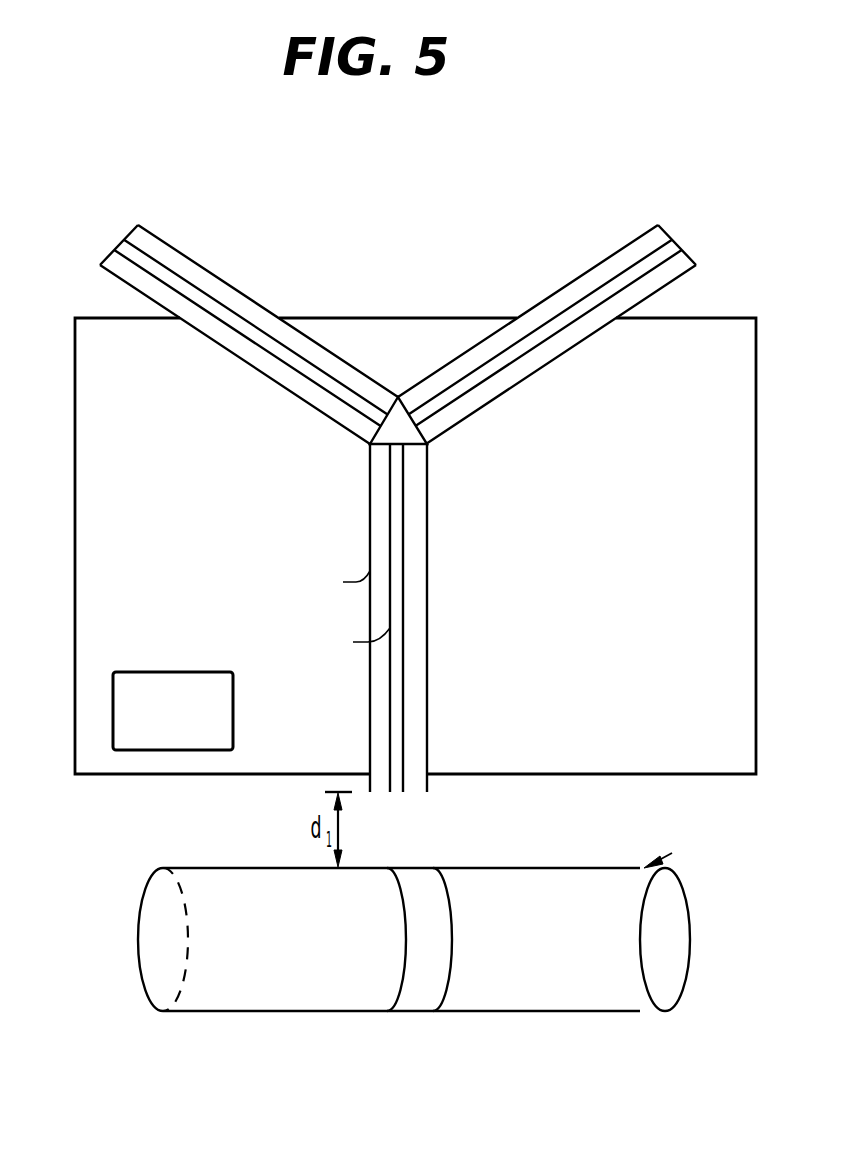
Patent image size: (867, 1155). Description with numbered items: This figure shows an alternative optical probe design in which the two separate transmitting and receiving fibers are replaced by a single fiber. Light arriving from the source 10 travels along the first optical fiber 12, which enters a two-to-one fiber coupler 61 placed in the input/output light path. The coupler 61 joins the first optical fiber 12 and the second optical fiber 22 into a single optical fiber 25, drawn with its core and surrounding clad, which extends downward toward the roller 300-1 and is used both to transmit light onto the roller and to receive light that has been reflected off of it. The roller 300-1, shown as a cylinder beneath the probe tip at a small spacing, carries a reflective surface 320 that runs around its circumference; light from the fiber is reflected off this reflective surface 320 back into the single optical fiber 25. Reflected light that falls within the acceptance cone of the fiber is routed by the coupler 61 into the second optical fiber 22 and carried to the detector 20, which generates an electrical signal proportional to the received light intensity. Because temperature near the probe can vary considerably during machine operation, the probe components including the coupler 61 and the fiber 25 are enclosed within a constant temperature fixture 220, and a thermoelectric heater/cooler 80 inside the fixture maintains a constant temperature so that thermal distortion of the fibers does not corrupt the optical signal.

The light source 10 is at (60, 223).
The first optical fiber 12 is at (236, 289).
The detector 20 is at (737, 228).
The second optical fiber 22 is at (561, 288).
The single optical fiber 25 is at (428, 532).
The fiber 2:1 coupler 61 is at (428, 447).
The thermoelectric heater/cooler 80 is at (236, 714).
The constant temperature fixture 220 is at (757, 650).
The reflective surface 320 is at (419, 868).
The roller 300-1 is at (573, 1013).